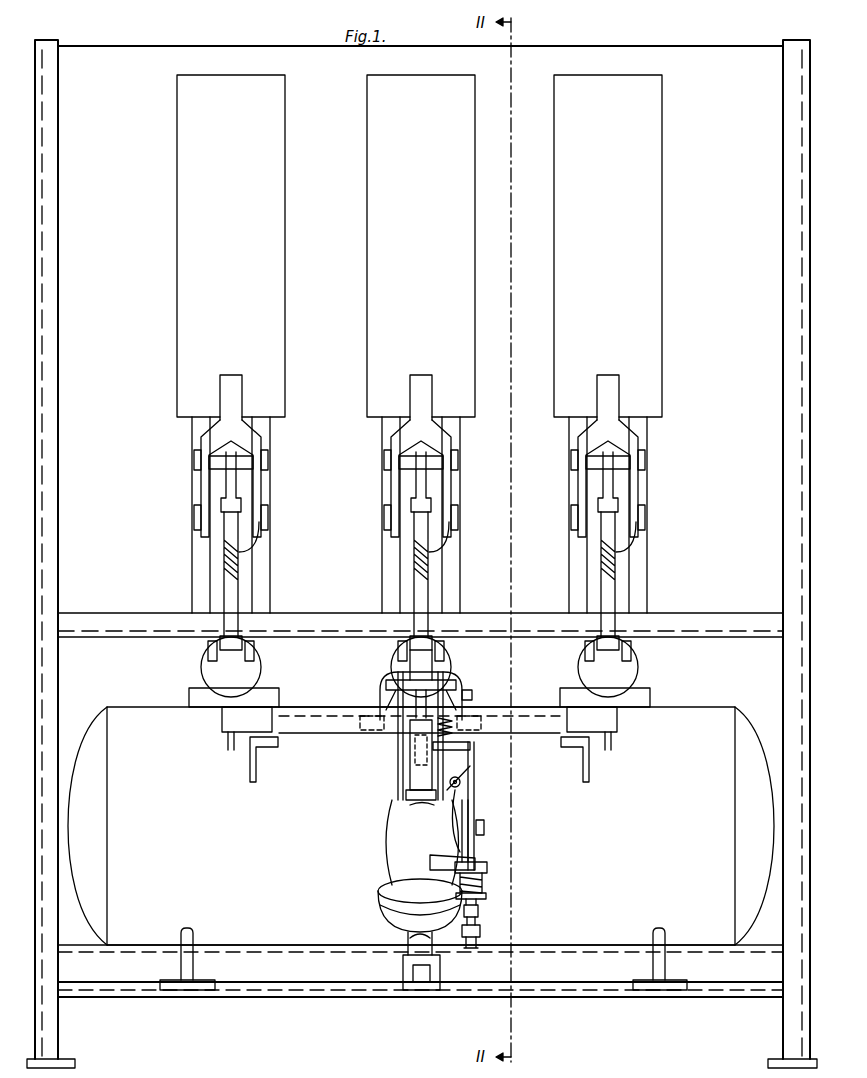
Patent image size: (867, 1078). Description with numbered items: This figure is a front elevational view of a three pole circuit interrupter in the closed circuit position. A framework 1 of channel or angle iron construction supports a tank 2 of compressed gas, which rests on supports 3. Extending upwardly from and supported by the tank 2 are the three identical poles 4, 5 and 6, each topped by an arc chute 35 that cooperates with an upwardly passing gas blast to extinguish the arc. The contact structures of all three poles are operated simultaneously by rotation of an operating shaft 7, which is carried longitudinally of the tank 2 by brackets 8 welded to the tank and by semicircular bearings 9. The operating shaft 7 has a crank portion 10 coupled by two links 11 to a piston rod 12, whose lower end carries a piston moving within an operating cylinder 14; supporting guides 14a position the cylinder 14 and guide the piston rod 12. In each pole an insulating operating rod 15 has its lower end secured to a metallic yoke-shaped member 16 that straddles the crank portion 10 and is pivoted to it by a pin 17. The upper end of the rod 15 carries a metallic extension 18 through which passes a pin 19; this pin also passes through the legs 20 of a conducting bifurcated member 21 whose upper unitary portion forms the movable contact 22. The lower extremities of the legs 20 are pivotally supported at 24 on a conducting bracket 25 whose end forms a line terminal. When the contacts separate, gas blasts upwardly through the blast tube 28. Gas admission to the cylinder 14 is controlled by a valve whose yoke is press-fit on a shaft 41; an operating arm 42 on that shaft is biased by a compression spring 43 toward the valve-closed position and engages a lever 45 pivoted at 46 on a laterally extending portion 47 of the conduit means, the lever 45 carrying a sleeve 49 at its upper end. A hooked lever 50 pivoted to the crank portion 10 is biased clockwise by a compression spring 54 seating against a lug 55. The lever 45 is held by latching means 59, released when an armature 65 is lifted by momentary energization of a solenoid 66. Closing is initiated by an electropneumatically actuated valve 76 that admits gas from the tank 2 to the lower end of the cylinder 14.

The framework 1 is at (60, 690).
The tank 2 is at (121, 707).
The supports 3 is at (194, 966).
The pole 4 is at (237, 191).
The pole 5 is at (426, 191).
The pole 6 is at (614, 194).
The operating shaft 7 is at (306, 735).
The brackets 8 is at (259, 768).
The bearings 9 is at (280, 702).
The crank portion 10 is at (214, 673).
The links 11 is at (395, 688).
The piston rod 12 is at (410, 764).
The operating cylinder 14 is at (392, 857).
The supporting guides 14a is at (398, 800).
The insulating operating rod 15 is at (239, 576).
The yoke-shaped member 16 is at (243, 641).
The pin 17 is at (256, 653).
The metallic extension 18 is at (237, 486).
The pin 19 is at (255, 462).
The legs 20 is at (269, 476).
The bifurcated member 21 is at (262, 440).
The movable contact 22 is at (234, 380).
The pivot 24 is at (269, 520).
The bracket 25 is at (256, 550).
The blast tube 28 is at (271, 597).
The arc chute 35 is at (325, 300).
The shaft 41 is at (456, 800).
The operating arm 42 is at (474, 808).
The compression spring 43 is at (466, 777).
The lever 45 is at (470, 852).
The pivot 46 is at (484, 828).
The laterally extending portion 47 is at (455, 830).
The sleeve 49 is at (470, 748).
The lever 50 is at (430, 790).
The compression spring 54 is at (456, 716).
The lug 55 is at (472, 697).
The latching means 59 is at (484, 889).
The armature 65 is at (481, 908).
The solenoid 66 is at (484, 867).
The electropneumatically actuated valve 76 is at (412, 975).